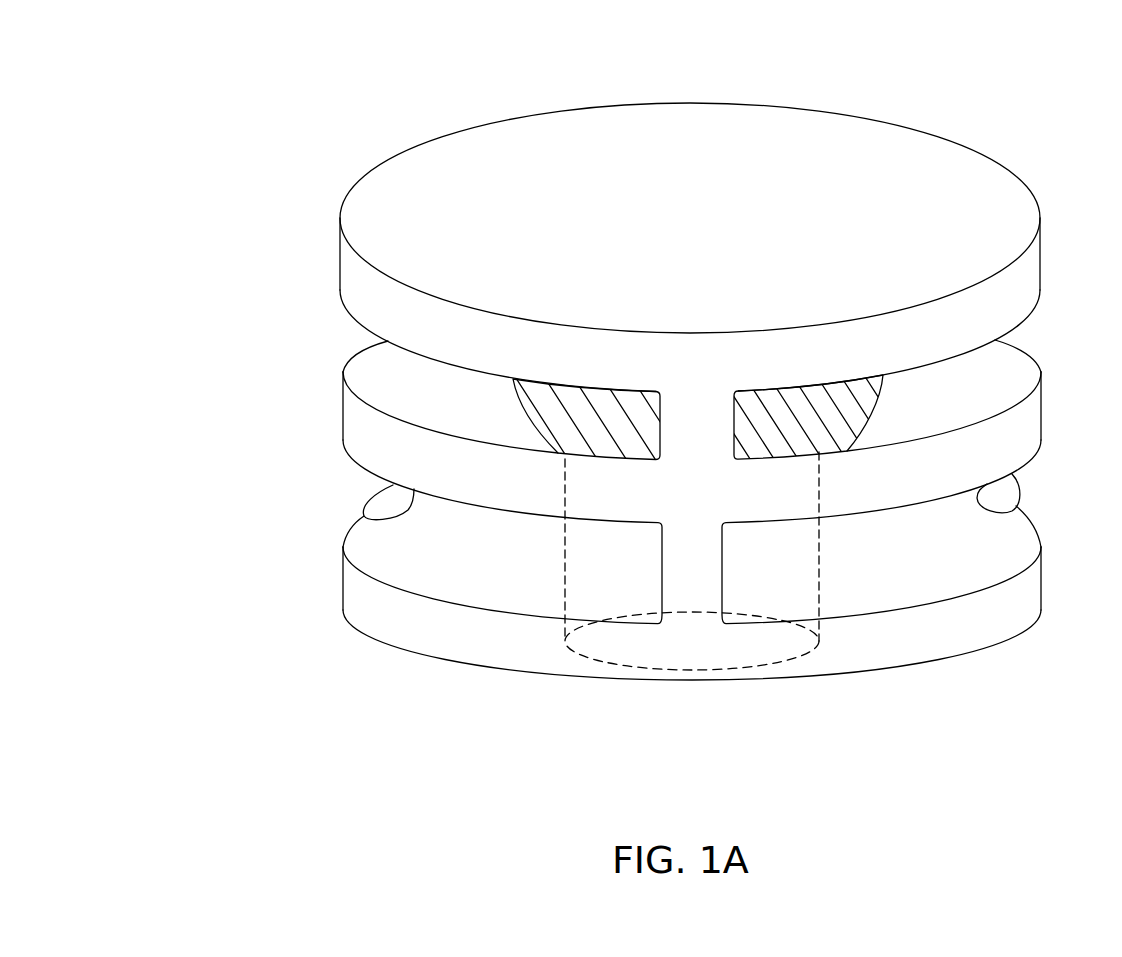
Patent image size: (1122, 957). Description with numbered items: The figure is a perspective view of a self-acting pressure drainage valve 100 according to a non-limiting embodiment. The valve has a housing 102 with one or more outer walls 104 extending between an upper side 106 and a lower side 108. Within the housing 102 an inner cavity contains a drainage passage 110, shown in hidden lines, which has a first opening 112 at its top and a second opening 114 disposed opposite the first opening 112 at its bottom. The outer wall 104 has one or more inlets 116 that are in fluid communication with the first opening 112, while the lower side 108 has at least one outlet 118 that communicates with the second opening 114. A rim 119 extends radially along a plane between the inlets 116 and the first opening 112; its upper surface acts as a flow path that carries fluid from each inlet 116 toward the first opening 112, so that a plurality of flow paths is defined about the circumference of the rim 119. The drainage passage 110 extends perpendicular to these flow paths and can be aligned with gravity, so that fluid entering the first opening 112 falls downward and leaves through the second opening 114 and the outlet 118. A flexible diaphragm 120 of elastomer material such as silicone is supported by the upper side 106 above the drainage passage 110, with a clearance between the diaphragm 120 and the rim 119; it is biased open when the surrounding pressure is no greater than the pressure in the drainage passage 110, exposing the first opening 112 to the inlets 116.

The self-acting pressure drainage valve 100 is at (236, 111).
The housing 102 is at (692, 386).
The outer wall 104 is at (693, 597).
The upper side 106 is at (690, 216).
The lower side 108 is at (420, 655).
The drainage passage 110 is at (822, 553).
The first opening 112 is at (510, 398).
The second opening 114 is at (602, 640).
The inlet 116 is at (408, 405).
The outlet 118 is at (758, 683).
The rim 119 is at (390, 352).
The flexible diaphragm 120 is at (860, 168).